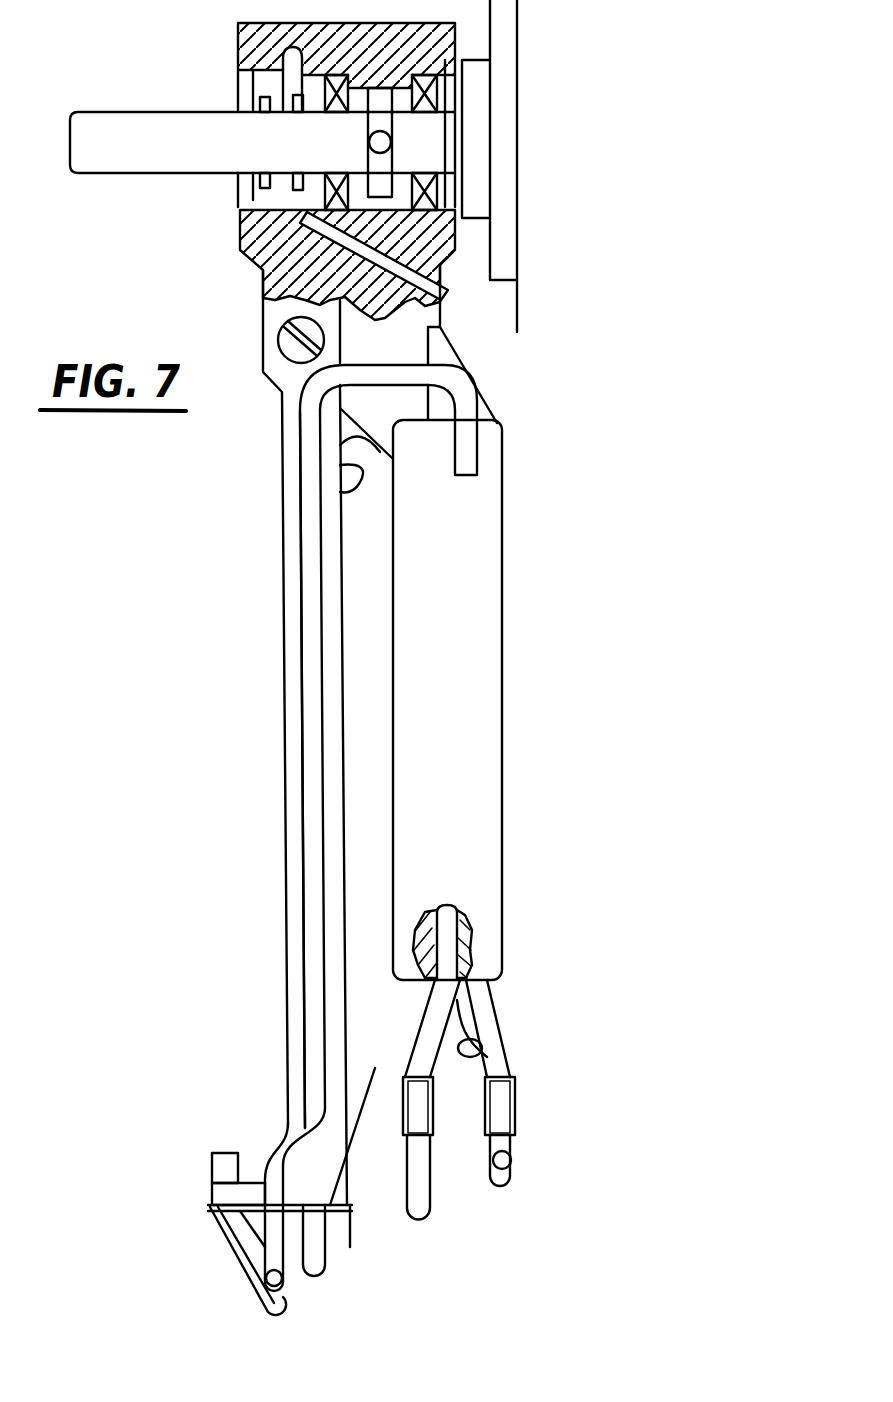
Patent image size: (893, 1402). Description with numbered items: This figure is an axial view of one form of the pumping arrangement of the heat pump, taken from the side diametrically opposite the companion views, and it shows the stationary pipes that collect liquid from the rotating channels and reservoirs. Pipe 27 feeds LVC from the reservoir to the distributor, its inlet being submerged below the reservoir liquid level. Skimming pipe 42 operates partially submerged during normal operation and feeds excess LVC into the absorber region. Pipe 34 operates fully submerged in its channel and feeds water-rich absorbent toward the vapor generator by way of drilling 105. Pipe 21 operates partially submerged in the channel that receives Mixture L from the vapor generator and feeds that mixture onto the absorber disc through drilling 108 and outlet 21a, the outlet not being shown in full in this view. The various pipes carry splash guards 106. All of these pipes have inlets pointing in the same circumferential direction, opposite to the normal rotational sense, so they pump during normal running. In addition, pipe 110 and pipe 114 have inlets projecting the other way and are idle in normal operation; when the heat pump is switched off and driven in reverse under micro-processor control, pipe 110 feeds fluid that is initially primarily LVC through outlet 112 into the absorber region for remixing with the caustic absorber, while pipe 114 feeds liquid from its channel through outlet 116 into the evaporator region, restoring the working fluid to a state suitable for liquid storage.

The drilling 105 is at (356, 262).
The outlet 21a is at (438, 352).
The outlet 112 is at (468, 455).
The outlet 116 is at (342, 491).
The pipe 110 is at (299, 748).
The drilling 108 is at (446, 921).
The pipe 114 is at (497, 1024).
The pipe 34 is at (482, 1055).
The splash guards 106 is at (402, 1077).
The pipe 21 is at (431, 1197).
The pipe 27 is at (233, 1233).
The skimming pipe 42 is at (322, 1248).